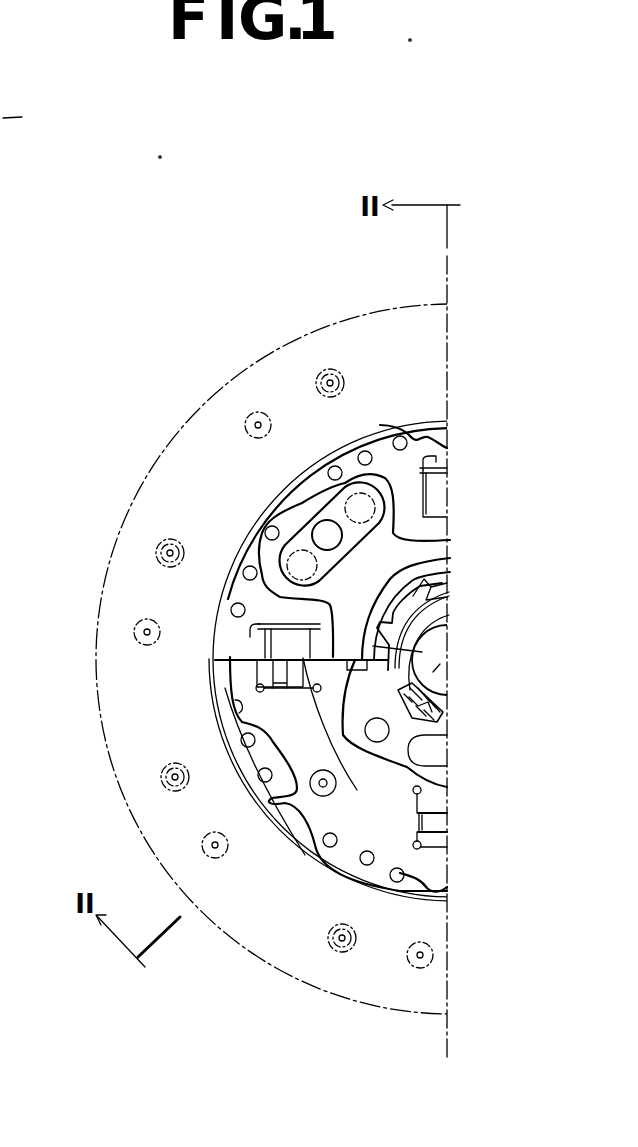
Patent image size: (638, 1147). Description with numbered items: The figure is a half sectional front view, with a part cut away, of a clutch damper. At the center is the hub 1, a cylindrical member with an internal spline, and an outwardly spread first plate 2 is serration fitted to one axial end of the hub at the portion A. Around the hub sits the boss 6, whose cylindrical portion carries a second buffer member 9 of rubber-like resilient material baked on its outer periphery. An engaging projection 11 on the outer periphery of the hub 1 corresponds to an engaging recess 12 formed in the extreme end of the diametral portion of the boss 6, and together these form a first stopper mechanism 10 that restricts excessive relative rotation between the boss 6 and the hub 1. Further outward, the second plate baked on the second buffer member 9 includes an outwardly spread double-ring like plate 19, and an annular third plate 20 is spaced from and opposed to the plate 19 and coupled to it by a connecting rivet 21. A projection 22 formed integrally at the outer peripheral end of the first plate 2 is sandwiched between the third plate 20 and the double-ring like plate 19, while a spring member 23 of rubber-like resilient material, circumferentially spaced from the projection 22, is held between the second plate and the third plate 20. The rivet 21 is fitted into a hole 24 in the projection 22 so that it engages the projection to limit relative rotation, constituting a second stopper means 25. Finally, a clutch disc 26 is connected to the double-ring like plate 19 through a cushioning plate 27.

The hub 1 is at (435, 623).
The first plate 2 is at (420, 548).
The boss 6 is at (440, 667).
The second buffer member 9 is at (425, 565).
The first stopper mechanism 10 is at (420, 588).
The engaging projection 11 is at (422, 608).
The engaging recess 12 is at (420, 604).
The double-ring like plate 19 is at (418, 443).
The third plate 20 is at (432, 858).
The connecting rivet 21 is at (283, 562).
The projection 22 is at (307, 512).
The spring member 23 is at (436, 482).
The hole 24 is at (305, 520).
The second stopper means 25 is at (337, 513).
The clutch disc 26 is at (428, 985).
The cushioning plate 27 is at (425, 893).
The portion A is at (441, 718).